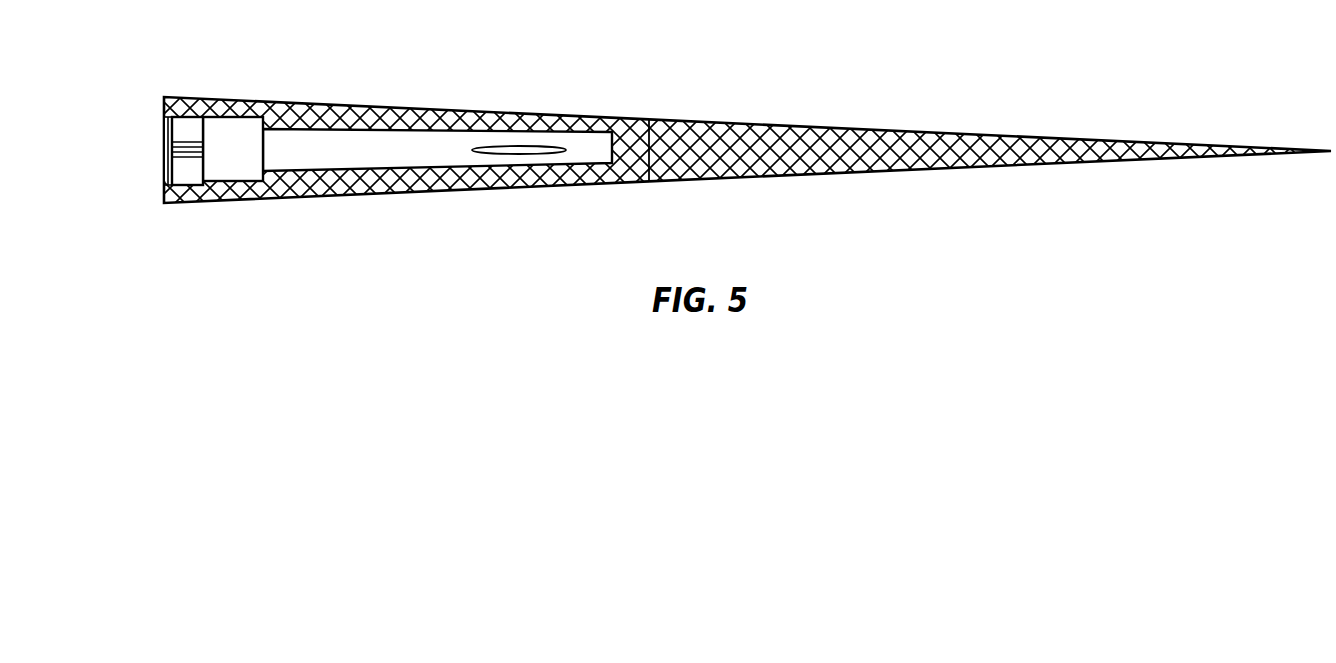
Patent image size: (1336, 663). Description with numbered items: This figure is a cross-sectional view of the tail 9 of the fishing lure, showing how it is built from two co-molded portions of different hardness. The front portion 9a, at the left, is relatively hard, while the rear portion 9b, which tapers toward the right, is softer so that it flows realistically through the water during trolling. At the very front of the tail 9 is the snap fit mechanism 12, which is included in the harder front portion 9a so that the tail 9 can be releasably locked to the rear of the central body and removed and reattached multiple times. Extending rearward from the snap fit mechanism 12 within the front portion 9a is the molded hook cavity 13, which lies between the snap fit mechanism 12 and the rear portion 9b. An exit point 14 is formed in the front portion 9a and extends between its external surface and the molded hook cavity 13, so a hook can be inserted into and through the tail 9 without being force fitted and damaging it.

The tail 9 is at (1000, 185).
The front portion 9a is at (190, 102).
The rear portion 9b is at (940, 142).
The snap fit mechanism 12 is at (151, 135).
The molded hook cavity 13 is at (333, 150).
The exit point 14 is at (523, 147).